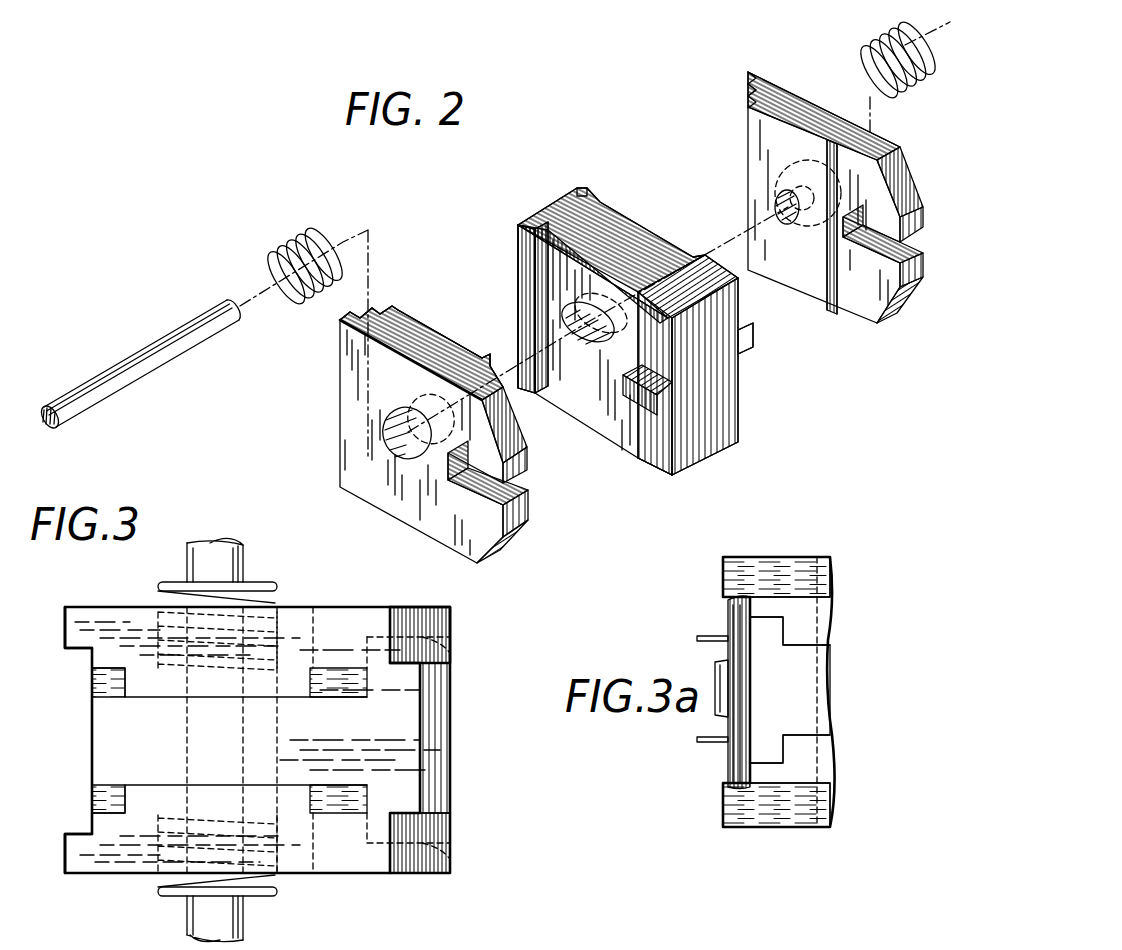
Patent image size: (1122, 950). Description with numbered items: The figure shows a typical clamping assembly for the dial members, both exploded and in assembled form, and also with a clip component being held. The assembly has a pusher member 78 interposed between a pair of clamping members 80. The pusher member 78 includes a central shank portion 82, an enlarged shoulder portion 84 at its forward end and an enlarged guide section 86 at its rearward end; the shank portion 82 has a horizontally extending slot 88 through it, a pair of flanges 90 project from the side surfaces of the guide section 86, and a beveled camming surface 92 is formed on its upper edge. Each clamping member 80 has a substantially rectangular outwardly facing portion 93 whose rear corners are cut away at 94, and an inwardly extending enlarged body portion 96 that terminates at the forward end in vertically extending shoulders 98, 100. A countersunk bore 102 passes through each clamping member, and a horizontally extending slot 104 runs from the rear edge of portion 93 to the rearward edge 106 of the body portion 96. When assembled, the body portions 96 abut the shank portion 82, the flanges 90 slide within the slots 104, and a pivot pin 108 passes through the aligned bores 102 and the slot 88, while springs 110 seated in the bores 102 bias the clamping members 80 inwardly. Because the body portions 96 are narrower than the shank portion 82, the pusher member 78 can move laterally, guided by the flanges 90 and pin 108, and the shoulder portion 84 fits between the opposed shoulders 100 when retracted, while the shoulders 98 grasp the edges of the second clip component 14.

In FIG. 3A, the second clip component 14 is at (718, 778).
In FIG. 2, the pusher member 78 is at (758, 424).
In FIG. 3, the pusher member 78 is at (461, 738).
In FIG. 3A, the pusher member 78 is at (848, 708).
In FIG. 2, the clamping members 80 is at (522, 544).
In FIG. 3, the clamping members 80 is at (92, 602).
In FIG. 3A, the clamping members 80 is at (802, 552).
In FIG. 2, the central shank portion 82 is at (632, 240).
In FIG. 2, the enlarged shoulder portion 84 is at (518, 235).
In FIG. 3, the enlarged shoulder portion 84 is at (95, 790).
In FIG. 3A, the enlarged shoulder portion 84 is at (770, 633).
In FIG. 2, the enlarged guide section 86 is at (652, 462).
In FIG. 2, the horizontally extending slot 88 is at (585, 345).
In FIG. 3, the horizontally extending slot 88 is at (270, 742).
In FIG. 2, the flanges 90 is at (632, 397).
In FIG. 3, the flanges 90 is at (452, 638).
In FIG. 2, the beveled camming surface 92 is at (738, 305).
In FIG. 3, the beveled camming surface 92 is at (440, 775).
In FIG. 2, the outwardly facing portion 93 is at (340, 362).
In FIG. 3, the outwardly facing portion 93 is at (352, 612).
In FIG. 2, the cut away rear corners 94 is at (510, 428).
In FIG. 3, the cut away rear corners 94 is at (452, 612).
In FIG. 2, the enlarged body portion 96 is at (422, 318).
In FIG. 3, the enlarged body portion 96 is at (296, 690).
In FIG. 2, the vertically extending shoulder 98 is at (352, 312).
In FIG. 3, the vertically extending shoulder 98 is at (74, 652).
In FIG. 3A, the vertically extending shoulder 98 is at (727, 600).
In FIG. 2, the vertically extending shoulder 100 is at (386, 305).
In FIG. 2, the countersunk bore 102 is at (388, 433).
In FIG. 2, the horizontally extending slot 104 is at (522, 489).
In FIG. 2, the rearward edge 106 is at (486, 360).
In FIG. 2, the pivot pin 108 is at (148, 373).
In FIG. 3, the pivot pin 108 is at (246, 556).
In FIG. 2, the springs 110 is at (322, 245).
In FIG. 3, the springs 110 is at (282, 588).